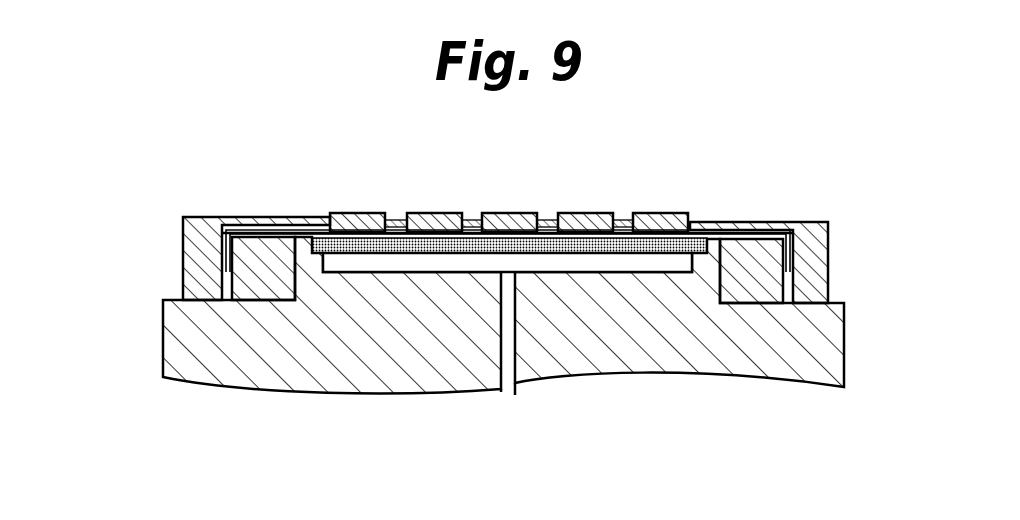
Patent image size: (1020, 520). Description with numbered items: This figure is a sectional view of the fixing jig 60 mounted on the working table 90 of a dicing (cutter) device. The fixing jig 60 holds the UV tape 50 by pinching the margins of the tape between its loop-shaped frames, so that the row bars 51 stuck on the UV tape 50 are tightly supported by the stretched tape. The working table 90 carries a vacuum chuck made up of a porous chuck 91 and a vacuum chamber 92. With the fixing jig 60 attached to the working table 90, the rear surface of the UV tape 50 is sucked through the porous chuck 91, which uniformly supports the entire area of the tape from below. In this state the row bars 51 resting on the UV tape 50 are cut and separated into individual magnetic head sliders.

The UV tape 50 is at (225, 258).
The row bars 51 is at (430, 213).
The fixing jig 60 is at (811, 218).
The working table 90 is at (823, 348).
The porous chuck 91 is at (352, 253).
The vacuum chamber 92 is at (447, 265).